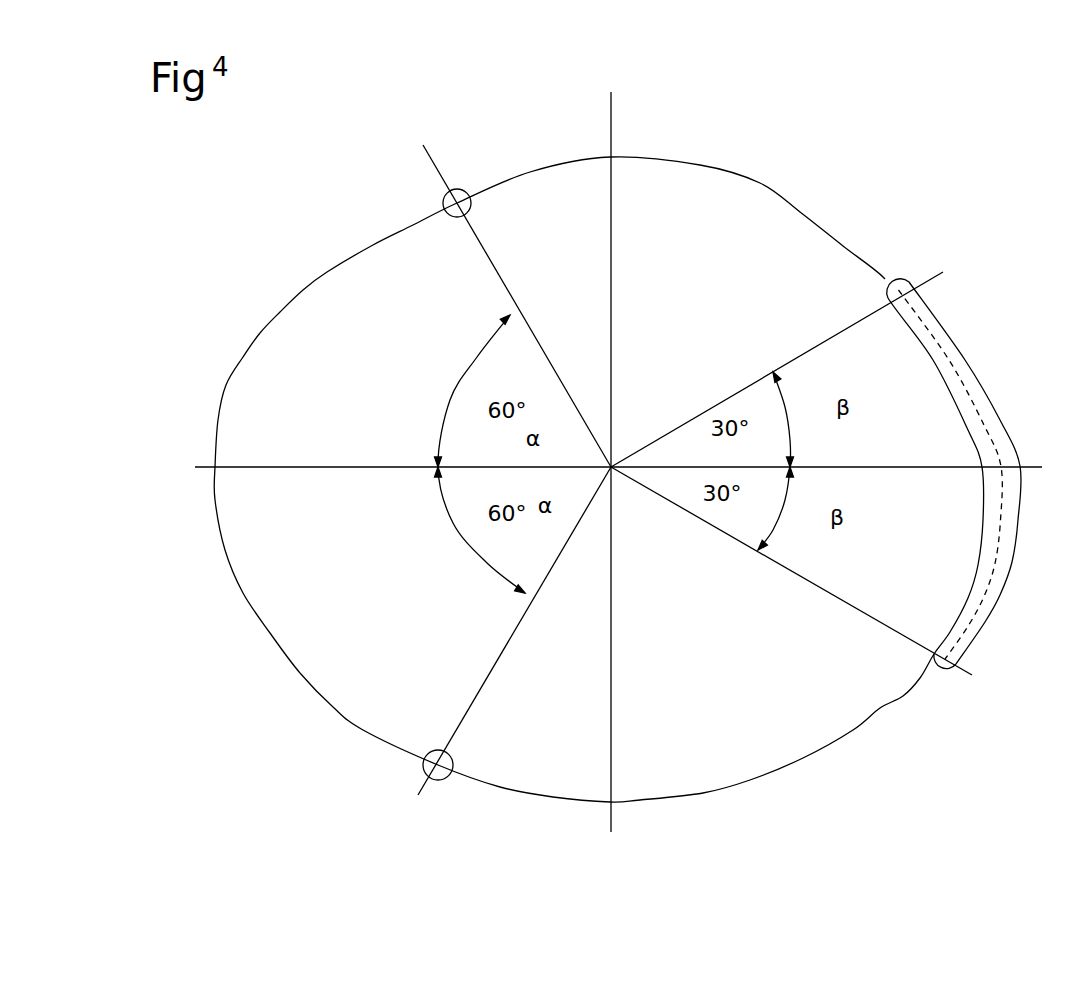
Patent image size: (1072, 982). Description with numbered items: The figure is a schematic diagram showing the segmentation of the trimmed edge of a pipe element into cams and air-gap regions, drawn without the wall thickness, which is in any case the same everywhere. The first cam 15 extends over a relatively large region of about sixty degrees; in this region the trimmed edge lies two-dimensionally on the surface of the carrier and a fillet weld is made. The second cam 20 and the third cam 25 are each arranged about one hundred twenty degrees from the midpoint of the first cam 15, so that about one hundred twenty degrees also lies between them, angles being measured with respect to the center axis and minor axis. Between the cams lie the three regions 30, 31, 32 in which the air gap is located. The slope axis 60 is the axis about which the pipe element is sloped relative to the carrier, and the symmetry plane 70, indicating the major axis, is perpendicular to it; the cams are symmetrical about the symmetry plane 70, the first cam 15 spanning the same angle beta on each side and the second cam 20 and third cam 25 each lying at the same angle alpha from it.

The first cam 15 is at (962, 340).
The second cam 20 is at (462, 190).
The third cam 25 is at (420, 770).
The region 30 is at (778, 195).
The region 31 is at (703, 793).
The region 32 is at (240, 363).
The slope axis 60 is at (612, 110).
The symmetry plane 70 is at (195, 467).